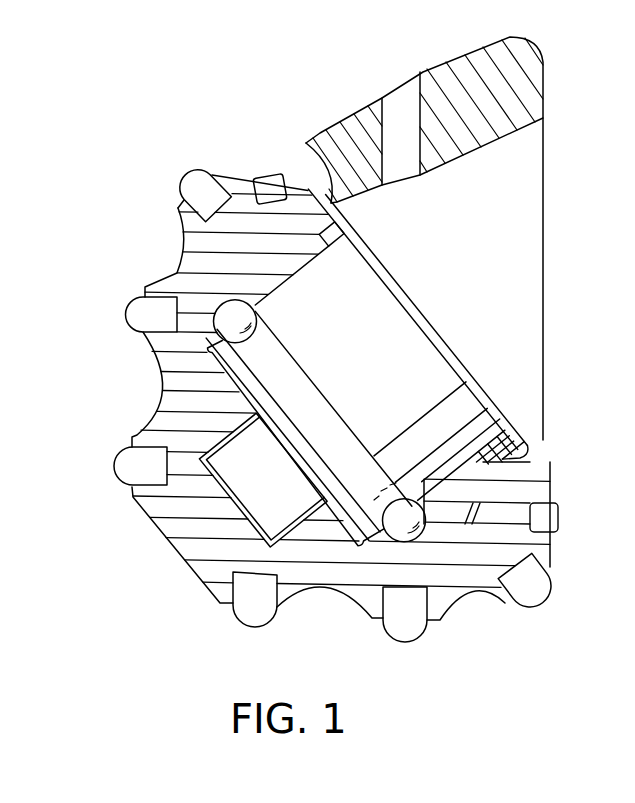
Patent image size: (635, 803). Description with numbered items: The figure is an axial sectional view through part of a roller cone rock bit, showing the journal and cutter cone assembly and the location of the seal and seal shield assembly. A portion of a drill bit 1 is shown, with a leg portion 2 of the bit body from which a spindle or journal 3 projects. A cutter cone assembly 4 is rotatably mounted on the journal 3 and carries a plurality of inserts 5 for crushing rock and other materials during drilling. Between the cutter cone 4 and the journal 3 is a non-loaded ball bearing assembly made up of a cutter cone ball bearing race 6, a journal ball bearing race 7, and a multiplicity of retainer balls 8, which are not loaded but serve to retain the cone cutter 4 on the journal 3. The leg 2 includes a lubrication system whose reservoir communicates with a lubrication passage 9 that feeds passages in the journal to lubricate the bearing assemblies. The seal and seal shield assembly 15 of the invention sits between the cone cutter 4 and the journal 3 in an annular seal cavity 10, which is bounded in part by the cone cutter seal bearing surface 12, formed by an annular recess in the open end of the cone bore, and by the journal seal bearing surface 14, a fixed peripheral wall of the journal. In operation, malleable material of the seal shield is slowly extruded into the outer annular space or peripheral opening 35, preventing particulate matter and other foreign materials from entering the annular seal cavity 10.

The drill bit 1 is at (560, 64).
The leg portion 2 is at (530, 92).
The spindle or journal 3 is at (442, 373).
The cutter cone assembly 4 is at (298, 602).
The inserts 5 is at (523, 583).
The cutter cone ball bearing race 6 is at (217, 302).
The journal ball bearing race 7 is at (165, 367).
The retainer balls 8 is at (393, 542).
The lubrication passage 9 is at (410, 163).
The annular seal cavity 10 is at (505, 447).
The cone cutter seal bearing surface 12 is at (540, 473).
The journal seal bearing surface 14 is at (517, 454).
The seal and seal shield assembly 15 is at (513, 444).
The outer annular space or peripheral opening 35 is at (533, 457).